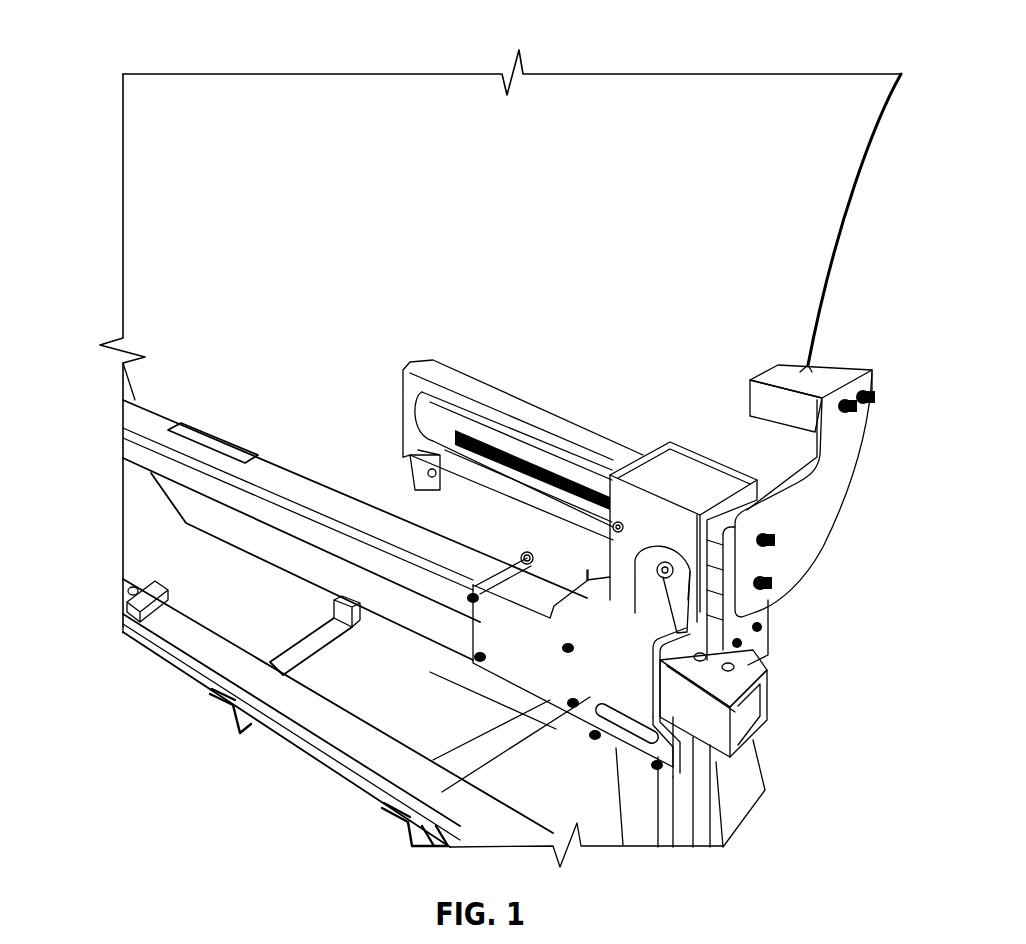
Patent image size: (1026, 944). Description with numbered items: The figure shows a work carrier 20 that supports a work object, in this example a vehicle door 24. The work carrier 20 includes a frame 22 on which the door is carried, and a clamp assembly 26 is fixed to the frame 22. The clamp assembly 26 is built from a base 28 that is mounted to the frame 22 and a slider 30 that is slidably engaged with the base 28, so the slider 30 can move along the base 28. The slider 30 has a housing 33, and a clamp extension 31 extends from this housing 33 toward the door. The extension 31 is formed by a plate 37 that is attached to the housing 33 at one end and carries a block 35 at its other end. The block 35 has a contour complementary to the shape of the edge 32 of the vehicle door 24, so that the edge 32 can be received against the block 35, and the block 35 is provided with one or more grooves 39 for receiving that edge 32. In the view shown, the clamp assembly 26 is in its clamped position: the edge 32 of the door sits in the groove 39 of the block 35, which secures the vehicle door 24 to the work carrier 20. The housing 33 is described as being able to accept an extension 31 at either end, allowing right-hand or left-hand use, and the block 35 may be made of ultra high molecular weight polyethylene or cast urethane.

The work carrier 20 is at (106, 284).
The frame 22 is at (348, 548).
The vehicle door 24 is at (773, 88).
The clamp assembly 26 is at (683, 436).
The base 28 is at (610, 600).
The slider 30 is at (493, 478).
The clamp extension 31 is at (822, 498).
The edge 32 is at (825, 290).
The housing 33 is at (538, 414).
The block 35 is at (757, 388).
The plate 37 is at (797, 548).
The groove 39 is at (803, 370).